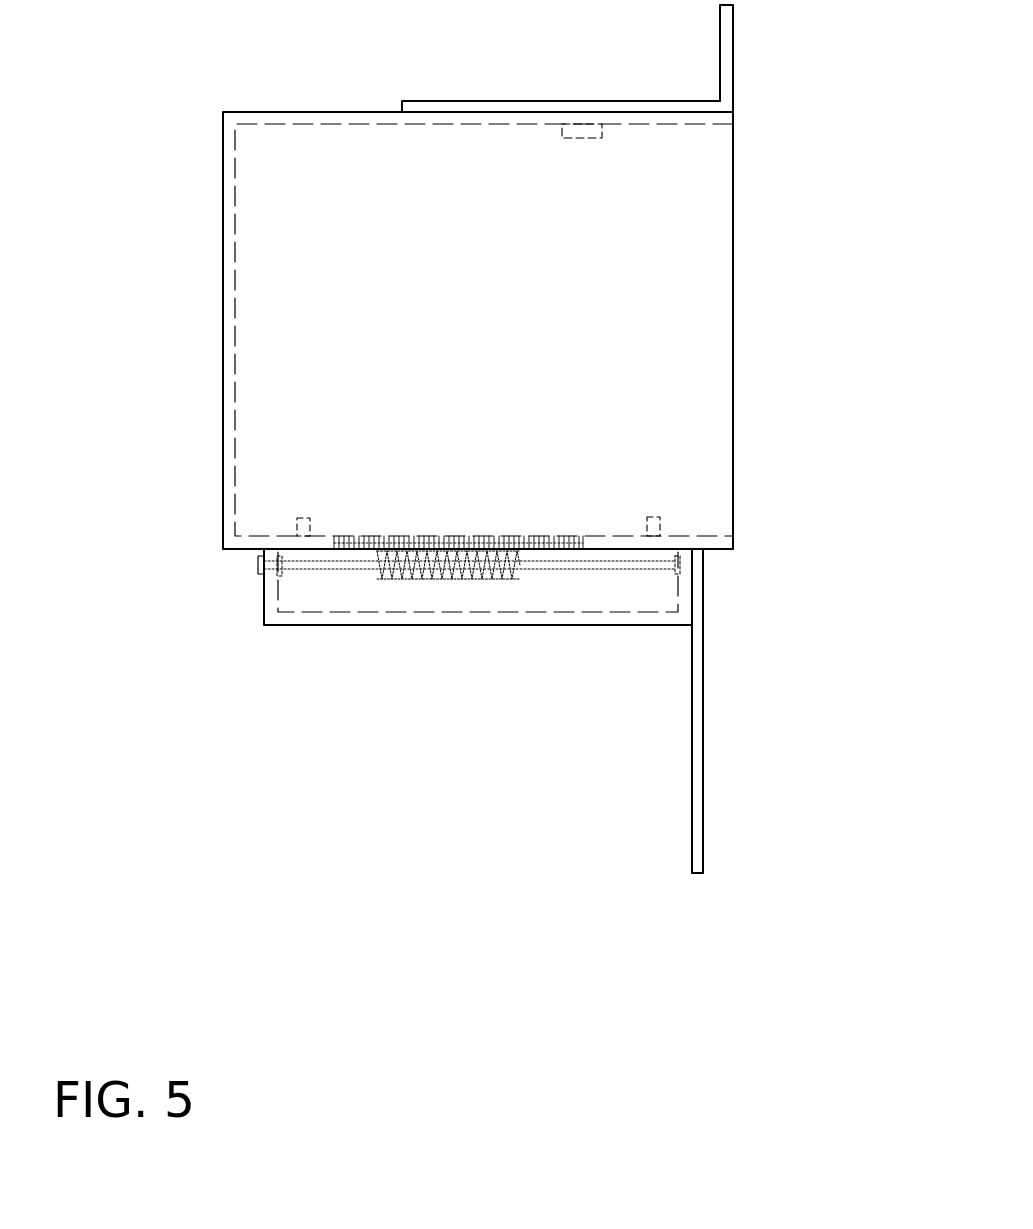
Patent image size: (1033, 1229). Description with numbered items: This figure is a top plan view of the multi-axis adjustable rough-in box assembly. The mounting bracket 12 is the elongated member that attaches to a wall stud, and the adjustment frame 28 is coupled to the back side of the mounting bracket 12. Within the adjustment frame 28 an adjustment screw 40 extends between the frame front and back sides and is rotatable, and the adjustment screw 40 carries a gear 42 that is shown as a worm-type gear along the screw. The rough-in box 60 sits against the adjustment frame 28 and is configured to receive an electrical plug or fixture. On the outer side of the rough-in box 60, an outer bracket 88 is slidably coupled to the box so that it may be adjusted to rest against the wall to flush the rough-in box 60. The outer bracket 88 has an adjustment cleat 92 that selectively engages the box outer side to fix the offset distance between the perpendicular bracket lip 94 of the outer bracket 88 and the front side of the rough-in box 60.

The mounting bracket 12 is at (699, 752).
The adjustment frame 28 is at (532, 627).
The adjustment screw 40 is at (331, 567).
The gear 42 is at (442, 560).
The rough-in box 60 is at (235, 503).
The outer bracket 88 is at (472, 100).
The adjustment cleat 92 is at (578, 136).
The perpendicular bracket lip 94 is at (725, 48).